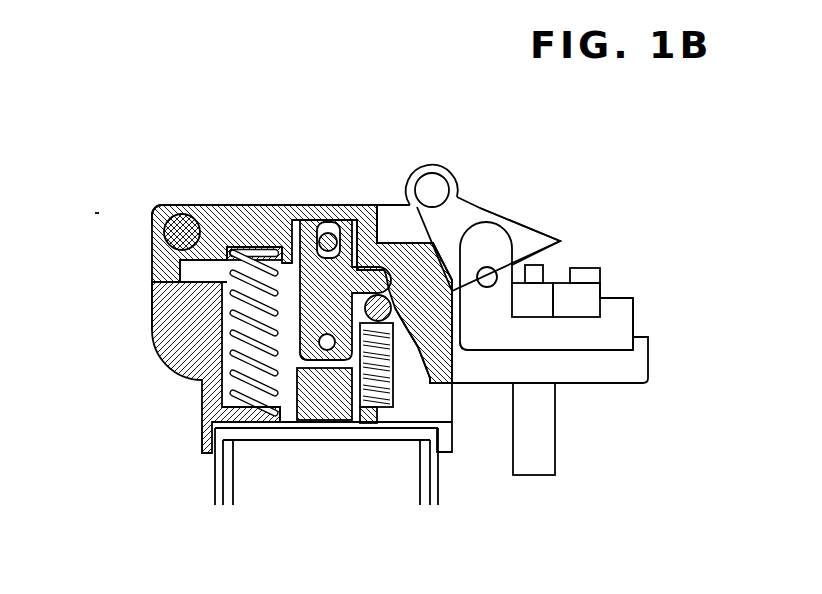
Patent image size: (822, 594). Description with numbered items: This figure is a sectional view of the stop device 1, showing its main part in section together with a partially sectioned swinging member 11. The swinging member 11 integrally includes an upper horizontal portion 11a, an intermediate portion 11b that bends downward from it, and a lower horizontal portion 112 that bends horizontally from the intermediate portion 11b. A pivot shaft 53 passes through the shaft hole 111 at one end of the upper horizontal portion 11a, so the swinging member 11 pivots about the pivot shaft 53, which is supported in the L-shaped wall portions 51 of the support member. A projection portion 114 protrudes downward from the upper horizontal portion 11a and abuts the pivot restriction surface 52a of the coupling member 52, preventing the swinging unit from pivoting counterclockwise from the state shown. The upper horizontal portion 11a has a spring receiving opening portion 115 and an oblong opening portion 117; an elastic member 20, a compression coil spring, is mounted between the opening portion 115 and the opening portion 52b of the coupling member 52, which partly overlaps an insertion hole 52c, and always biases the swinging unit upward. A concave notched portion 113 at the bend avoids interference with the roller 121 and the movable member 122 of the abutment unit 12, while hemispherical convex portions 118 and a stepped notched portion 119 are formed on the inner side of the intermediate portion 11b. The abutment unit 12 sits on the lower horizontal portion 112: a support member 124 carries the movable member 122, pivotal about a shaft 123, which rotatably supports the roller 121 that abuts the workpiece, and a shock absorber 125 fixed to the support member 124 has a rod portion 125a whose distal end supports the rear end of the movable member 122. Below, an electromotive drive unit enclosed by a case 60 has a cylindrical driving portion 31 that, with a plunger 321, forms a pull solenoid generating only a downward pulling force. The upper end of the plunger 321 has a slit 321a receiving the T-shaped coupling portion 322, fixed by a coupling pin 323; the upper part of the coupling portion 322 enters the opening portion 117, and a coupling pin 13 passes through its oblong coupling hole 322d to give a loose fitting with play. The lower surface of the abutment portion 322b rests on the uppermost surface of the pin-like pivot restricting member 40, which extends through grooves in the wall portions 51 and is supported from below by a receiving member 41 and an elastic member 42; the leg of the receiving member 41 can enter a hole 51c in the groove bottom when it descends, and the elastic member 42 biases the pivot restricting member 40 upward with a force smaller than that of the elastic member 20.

The stop device 1 is at (92, 208).
The swinging member 11 is at (235, 166).
The upper horizontal portion 11a is at (283, 205).
The intermediate portion 11b is at (453, 305).
The abutment unit 12 is at (576, 169).
The coupling pin 13 is at (350, 220).
The elastic member 20 is at (202, 398).
The driving portion 31 is at (415, 493).
The pivot restricting member 40 is at (443, 368).
The receiving member 41 is at (397, 392).
The elastic member 42 is at (390, 405).
The wall portion 51 is at (455, 392).
The hole 51c is at (441, 451).
The coupling member 52 is at (135, 325).
The pivot restriction surface 52a is at (165, 270).
The opening portion 52b is at (252, 418).
The insertion hole 52c is at (287, 415).
The pivot shaft 53 is at (178, 205).
The case 60 is at (210, 470).
The shaft hole 111 is at (155, 205).
The lower horizontal portion 112 is at (600, 375).
The notched portion 113 is at (388, 205).
The projection portion 114 is at (152, 292).
The opening portion 115 is at (230, 205).
The opening portion 117 is at (362, 205).
The convex portion 118 is at (493, 222).
The notched portion 119 is at (462, 336).
The roller 121 is at (448, 172).
The movable member 122 is at (560, 240).
The shaft 123 is at (538, 265).
The support member 124 is at (605, 327).
The shock absorber 125 is at (550, 460).
The rod portion 125a is at (583, 268).
The plunger 321 is at (340, 420).
The slit 321a is at (297, 358).
The coupling portion 322 is at (300, 205).
The abutment portion 322b is at (392, 242).
The coupling hole 322d is at (317, 205).
The coupling pin 323 is at (297, 338).